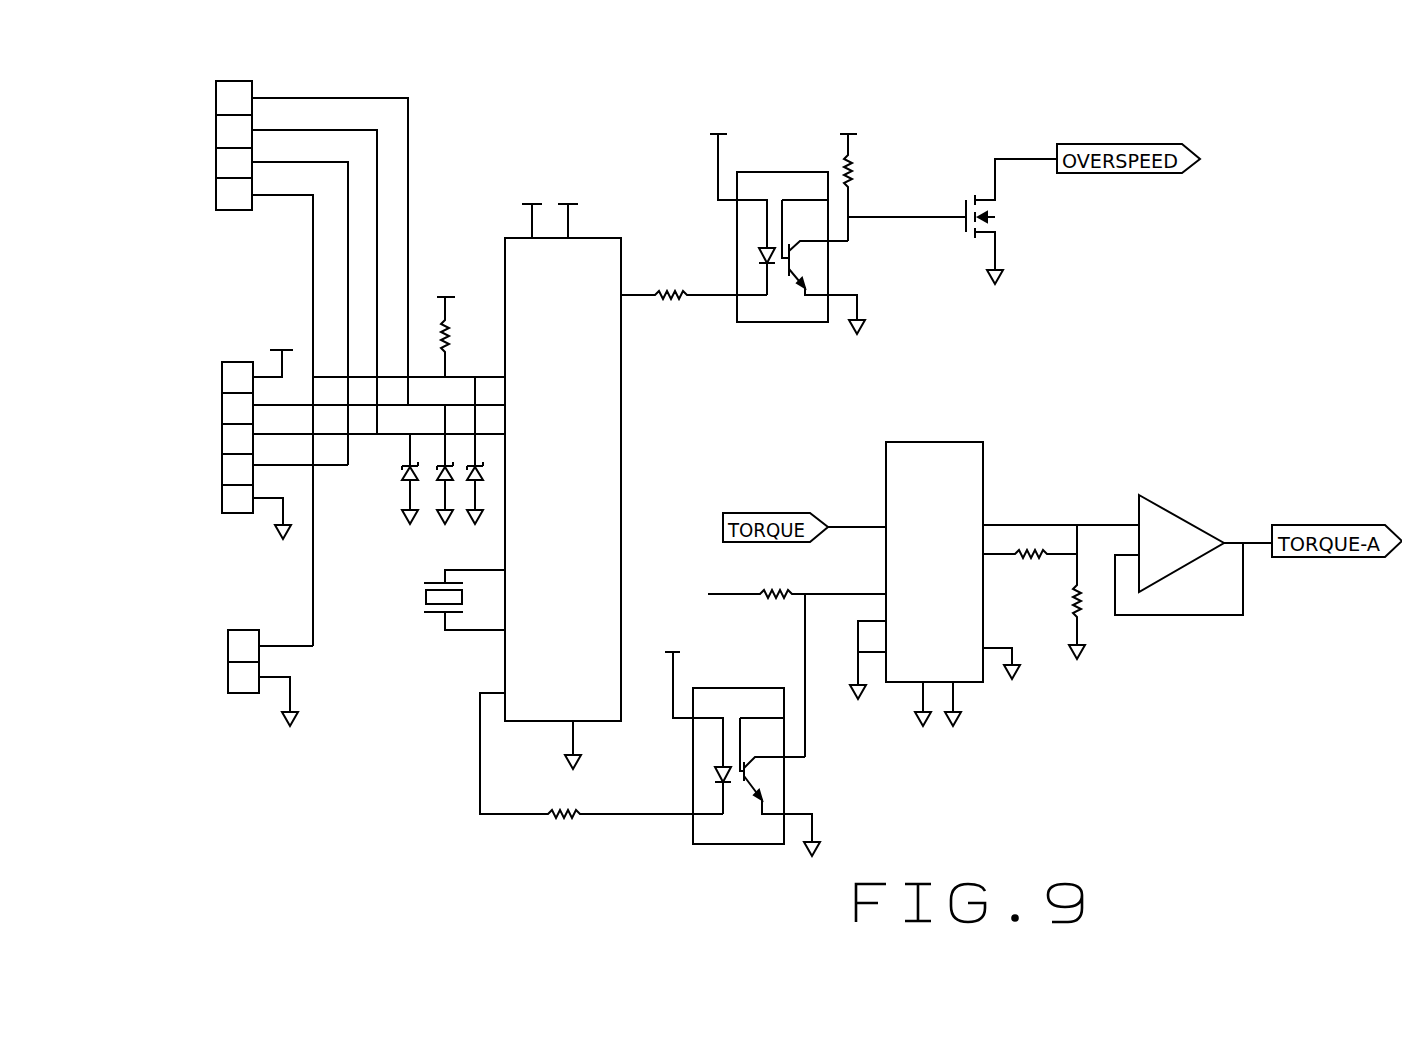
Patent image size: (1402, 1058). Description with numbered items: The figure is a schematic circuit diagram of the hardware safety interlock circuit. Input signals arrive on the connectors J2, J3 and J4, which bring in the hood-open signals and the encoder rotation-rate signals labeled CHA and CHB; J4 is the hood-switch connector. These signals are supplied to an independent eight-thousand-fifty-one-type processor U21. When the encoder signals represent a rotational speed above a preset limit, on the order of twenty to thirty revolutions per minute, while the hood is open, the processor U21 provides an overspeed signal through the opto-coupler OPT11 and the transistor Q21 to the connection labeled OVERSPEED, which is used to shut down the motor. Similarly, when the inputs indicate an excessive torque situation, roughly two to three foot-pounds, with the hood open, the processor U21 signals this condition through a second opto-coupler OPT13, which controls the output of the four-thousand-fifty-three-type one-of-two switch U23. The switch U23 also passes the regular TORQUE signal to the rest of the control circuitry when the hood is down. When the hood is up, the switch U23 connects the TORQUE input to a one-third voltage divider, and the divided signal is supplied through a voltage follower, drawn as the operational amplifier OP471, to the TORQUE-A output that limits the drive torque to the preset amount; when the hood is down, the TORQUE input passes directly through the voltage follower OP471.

The connector J2 is at (205, 67).
The encoder connector J3 is at (205, 318).
The hood switch connector J4 is at (203, 592).
The 8051-type processor U21 is at (621, 466).
The 4053-type 1-of-2 switch U23 is at (886, 492).
The opto-coupler OPT11 is at (805, 322).
The opto-coupler OPT13 is at (767, 688).
The transistor Q21 is at (1000, 221).
The operational amplifier OP471 is at (1193, 555).